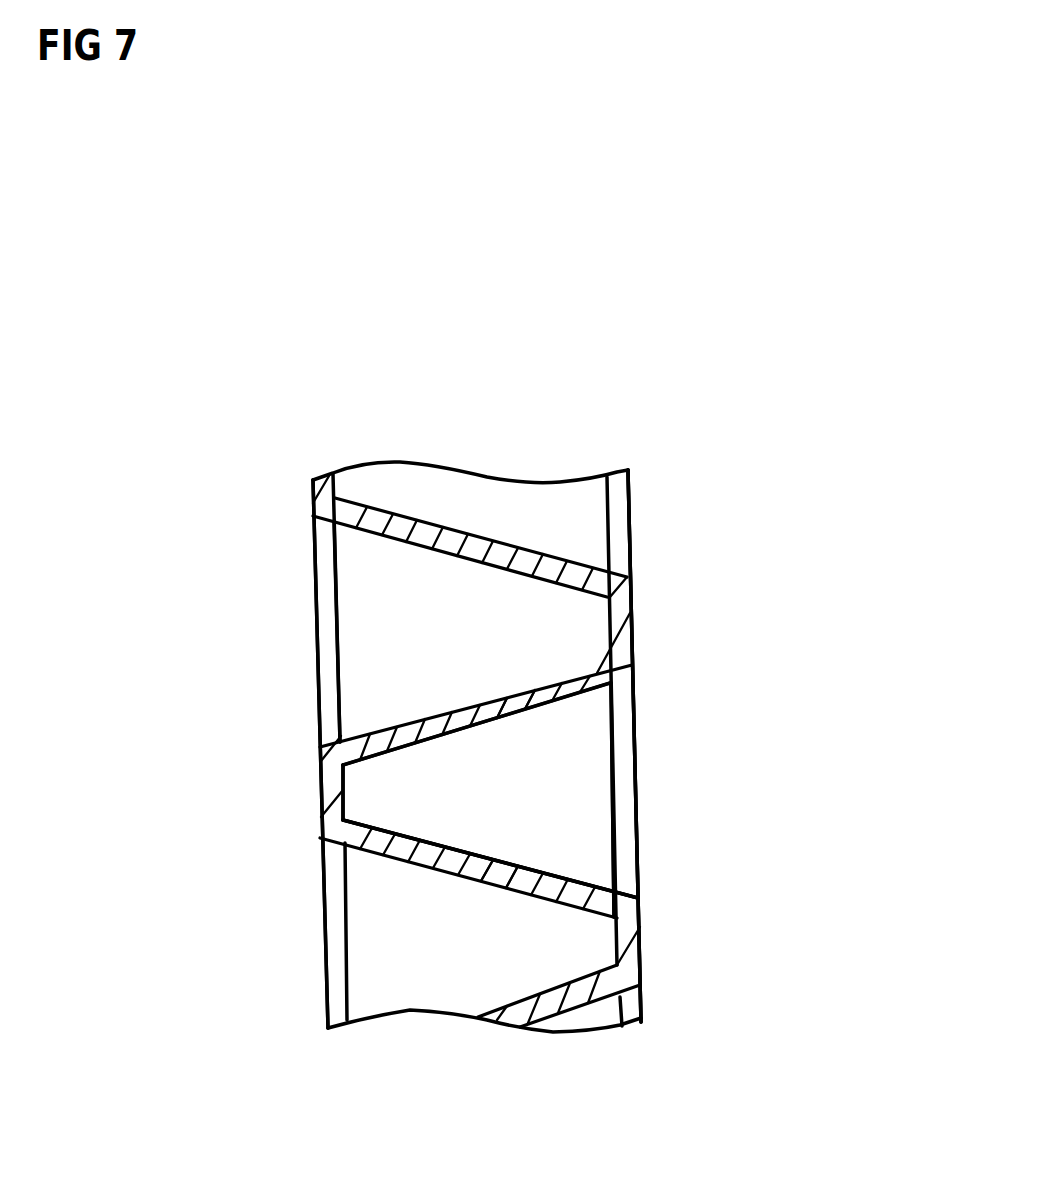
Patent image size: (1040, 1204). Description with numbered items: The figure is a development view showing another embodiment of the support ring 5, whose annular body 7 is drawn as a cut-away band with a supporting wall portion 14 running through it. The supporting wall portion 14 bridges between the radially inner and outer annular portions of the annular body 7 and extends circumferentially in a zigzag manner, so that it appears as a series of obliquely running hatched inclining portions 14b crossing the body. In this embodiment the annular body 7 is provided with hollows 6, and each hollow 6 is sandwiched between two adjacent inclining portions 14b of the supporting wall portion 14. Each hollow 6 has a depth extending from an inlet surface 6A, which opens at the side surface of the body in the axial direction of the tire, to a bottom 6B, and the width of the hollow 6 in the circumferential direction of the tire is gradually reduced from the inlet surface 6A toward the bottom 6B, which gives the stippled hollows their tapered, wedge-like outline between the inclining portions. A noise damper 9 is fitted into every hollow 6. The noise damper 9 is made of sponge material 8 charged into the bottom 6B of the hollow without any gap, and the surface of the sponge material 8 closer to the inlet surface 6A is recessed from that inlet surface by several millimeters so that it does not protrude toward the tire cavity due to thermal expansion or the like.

The support ring 5 is at (634, 531).
The hollow 6 is at (397, 630).
The inlet surface 6A is at (636, 780).
The bottom 6B is at (343, 796).
The annular body 7 is at (636, 710).
The sponge material 8 is at (490, 859).
The noise damper 9 is at (498, 812).
The supporting wall portion 14 is at (378, 742).
The inclining portion 14b is at (520, 690).